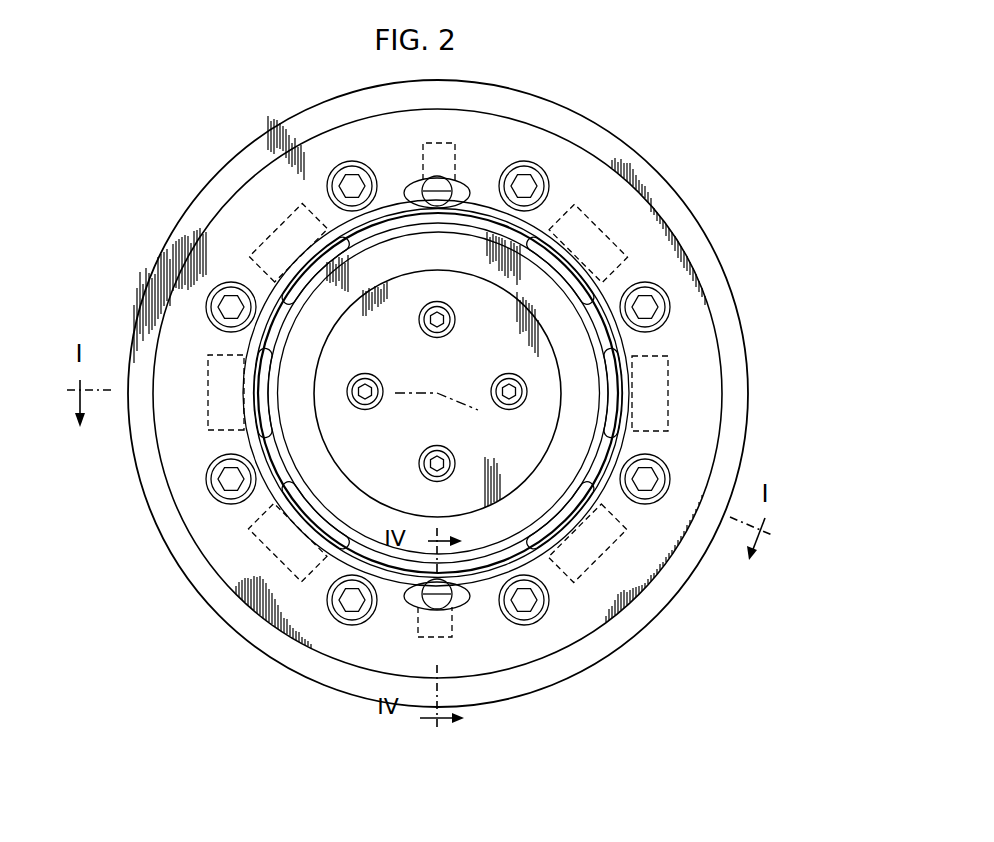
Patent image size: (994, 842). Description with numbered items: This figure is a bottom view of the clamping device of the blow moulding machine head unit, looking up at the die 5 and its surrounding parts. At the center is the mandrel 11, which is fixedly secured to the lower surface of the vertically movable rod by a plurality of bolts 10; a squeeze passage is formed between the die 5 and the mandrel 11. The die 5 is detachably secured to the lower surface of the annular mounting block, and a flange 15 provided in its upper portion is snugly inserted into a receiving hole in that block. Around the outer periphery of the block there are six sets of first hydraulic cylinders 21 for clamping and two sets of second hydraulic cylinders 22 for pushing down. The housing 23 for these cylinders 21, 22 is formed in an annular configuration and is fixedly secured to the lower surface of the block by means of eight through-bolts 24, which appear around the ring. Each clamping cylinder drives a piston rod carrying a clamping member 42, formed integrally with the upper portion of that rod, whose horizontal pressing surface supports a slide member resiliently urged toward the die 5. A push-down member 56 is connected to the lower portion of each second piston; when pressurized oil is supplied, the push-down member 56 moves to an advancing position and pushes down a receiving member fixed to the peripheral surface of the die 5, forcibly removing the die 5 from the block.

The die 5 is at (523, 252).
The bolts 10 is at (446, 326).
The mandrel 11 is at (528, 350).
The flange 15 is at (610, 343).
The first hydraulic cylinders 21 is at (198, 414).
The second hydraulic cylinders 22 is at (470, 630).
The housing 23 is at (214, 158).
The through-bolts 24 is at (215, 297).
The clamping member 42 is at (258, 377).
The push-down member 56 is at (438, 200).